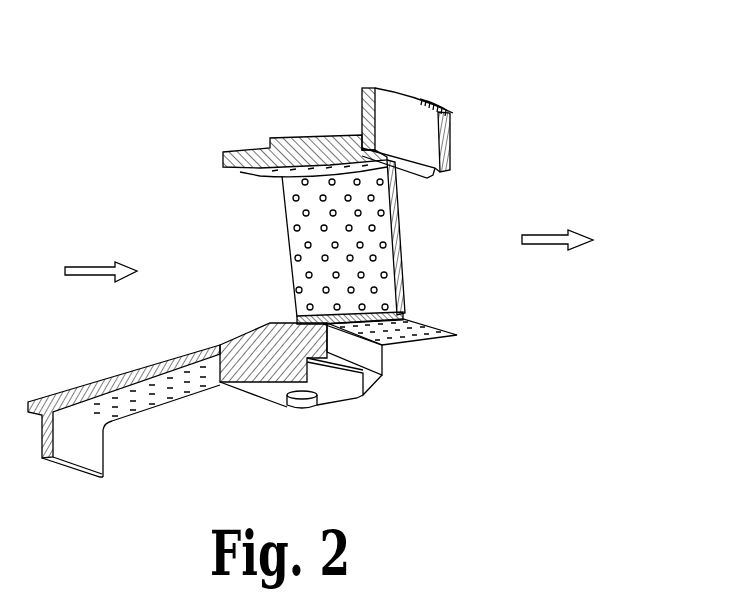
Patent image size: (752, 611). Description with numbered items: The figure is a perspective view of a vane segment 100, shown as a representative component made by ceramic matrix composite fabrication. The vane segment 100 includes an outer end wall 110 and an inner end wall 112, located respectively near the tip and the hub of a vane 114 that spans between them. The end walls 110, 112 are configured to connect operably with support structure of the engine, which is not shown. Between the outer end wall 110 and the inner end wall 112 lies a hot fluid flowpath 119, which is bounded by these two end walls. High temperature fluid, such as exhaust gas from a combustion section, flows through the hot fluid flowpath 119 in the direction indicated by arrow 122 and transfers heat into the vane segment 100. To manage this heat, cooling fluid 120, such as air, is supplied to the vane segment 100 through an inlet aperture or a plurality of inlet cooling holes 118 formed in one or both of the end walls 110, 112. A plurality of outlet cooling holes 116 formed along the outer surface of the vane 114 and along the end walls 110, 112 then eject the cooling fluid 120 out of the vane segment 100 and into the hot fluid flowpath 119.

The vane segment 100 is at (440, 62).
The outer end wall 110 is at (415, 132).
The inner end wall 112 is at (452, 331).
The vane 114 is at (396, 263).
The outlet cooling holes 116 is at (266, 171).
The inlet cooling holes 118 is at (150, 399).
The hot fluid flowpath 119 is at (192, 313).
The cooling fluid 120 is at (324, 99).
The arrow 122 is at (87, 277).